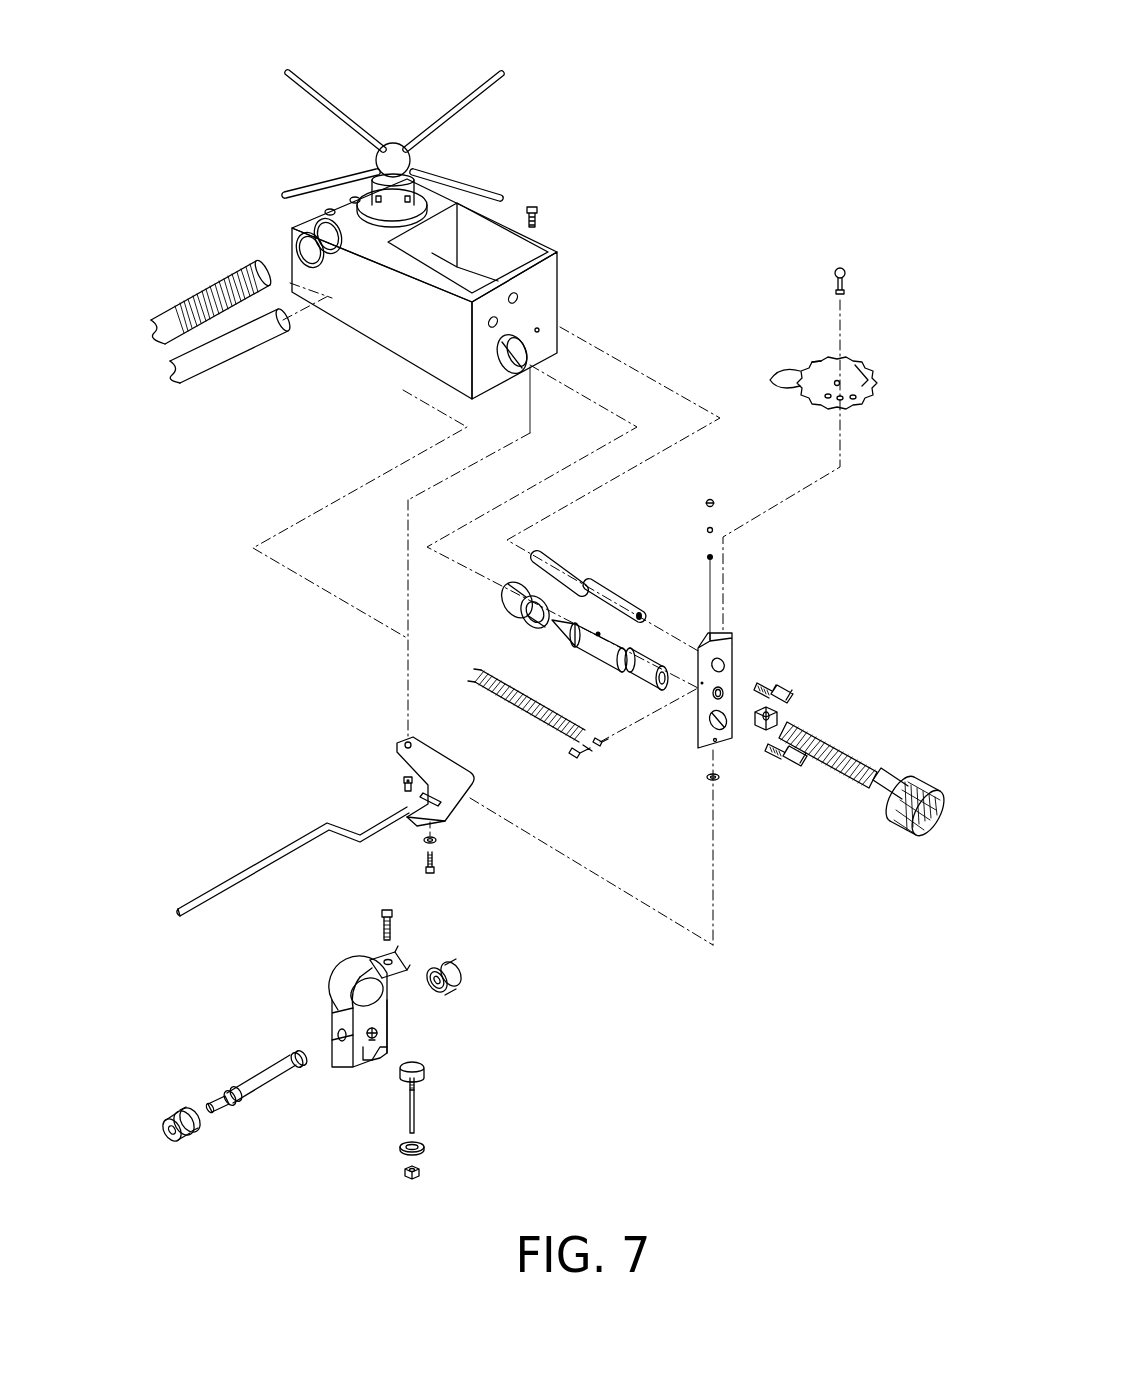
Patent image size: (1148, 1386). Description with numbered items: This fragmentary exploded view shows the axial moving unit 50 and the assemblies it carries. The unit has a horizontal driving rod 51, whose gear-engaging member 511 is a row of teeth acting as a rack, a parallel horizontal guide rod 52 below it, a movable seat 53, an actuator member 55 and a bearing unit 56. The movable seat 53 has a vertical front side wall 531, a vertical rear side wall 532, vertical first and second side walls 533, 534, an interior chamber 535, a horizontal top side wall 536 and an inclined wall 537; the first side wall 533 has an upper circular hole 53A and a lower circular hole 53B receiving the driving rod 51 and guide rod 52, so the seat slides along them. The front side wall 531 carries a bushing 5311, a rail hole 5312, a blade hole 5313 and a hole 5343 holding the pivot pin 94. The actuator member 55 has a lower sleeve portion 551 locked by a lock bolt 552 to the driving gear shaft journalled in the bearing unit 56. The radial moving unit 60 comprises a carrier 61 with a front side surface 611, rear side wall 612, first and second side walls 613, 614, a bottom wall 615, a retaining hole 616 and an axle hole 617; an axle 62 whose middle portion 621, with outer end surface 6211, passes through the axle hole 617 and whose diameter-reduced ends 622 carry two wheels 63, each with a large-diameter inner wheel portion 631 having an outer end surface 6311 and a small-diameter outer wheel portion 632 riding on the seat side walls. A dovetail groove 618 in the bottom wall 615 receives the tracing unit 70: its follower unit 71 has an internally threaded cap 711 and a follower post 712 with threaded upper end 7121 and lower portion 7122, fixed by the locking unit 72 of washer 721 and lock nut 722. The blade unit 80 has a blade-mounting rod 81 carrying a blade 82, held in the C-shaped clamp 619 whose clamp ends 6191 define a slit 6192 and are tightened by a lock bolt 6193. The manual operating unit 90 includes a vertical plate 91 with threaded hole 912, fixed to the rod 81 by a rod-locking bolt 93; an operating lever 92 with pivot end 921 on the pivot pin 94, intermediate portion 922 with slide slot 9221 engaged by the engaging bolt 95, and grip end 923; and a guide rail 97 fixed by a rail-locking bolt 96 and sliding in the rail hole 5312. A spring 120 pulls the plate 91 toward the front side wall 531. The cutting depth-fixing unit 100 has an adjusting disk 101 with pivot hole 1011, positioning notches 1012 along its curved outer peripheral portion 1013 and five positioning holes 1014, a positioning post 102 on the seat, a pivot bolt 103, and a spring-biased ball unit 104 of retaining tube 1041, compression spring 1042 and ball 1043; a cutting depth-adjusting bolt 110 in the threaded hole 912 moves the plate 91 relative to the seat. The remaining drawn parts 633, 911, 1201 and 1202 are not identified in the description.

The axial moving unit 50 is at (352, 360).
The horizontal driving rod 51 is at (192, 316).
The gear-engaging member 511 is at (180, 334).
The horizontal guide rod 52 is at (215, 383).
The movable seat 53 is at (337, 323).
The upper circular hole 53A is at (297, 238).
The lower circular hole 53B is at (313, 230).
The front side wall 531 is at (560, 266).
The bushing 5311 is at (510, 575).
The rail hole 5312 is at (520, 297).
The blade hole 5313 is at (500, 320).
The rear side wall 532 is at (293, 258).
The first side wall 533 is at (402, 330).
The second side wall 534 is at (483, 214).
The interior chamber 535 is at (498, 242).
The horizontal top side wall 536 is at (350, 197).
The inclined wall 537 is at (325, 210).
The hole 5343 is at (542, 330).
The actuator member 55 is at (462, 94).
The lower sleeve portion 551 is at (360, 180).
The lock bolt 552 is at (388, 140).
The bearing unit 56 is at (420, 192).
The radial moving unit 60 is at (252, 1120).
The carrier 61 is at (333, 993).
The front side surface 611 is at (388, 1025).
The rear side wall 612 is at (337, 1003).
The first side wall 613 is at (345, 1053).
The second side wall 614 is at (378, 1040).
The bottom wall 615 is at (372, 1058).
The retaining hole 616 is at (370, 968).
The axle hole 617 is at (338, 1034).
The dovetail groove 618 is at (378, 1062).
The C-shaped clamp 619 is at (378, 951).
The clamp ends 6191 is at (398, 950).
The slit 6192 is at (398, 958).
The lock bolt 6193 is at (380, 913).
The axle 62 is at (278, 1089).
The middle portion 621 is at (238, 1089).
The outer end surface 6211 is at (225, 1098).
The diameter-reduced ends 622 is at (292, 1060).
The wheels 63 is at (490, 955).
The large-diameter inner wheel portion 631 is at (460, 986).
The outer end surface 6311 is at (170, 1118).
The small-diameter outer wheel portion 632 is at (456, 977).
The hole 633 is at (440, 976).
The tracing unit 70 is at (386, 1162).
The follower unit 71 is at (420, 1093).
The internally threaded cap 711 is at (426, 1071).
The vertical follower post 712 is at (418, 1110).
The externally threaded upper end 7121 is at (420, 1091).
The lower portion 7122 is at (418, 1125).
The locking unit 72 is at (404, 1181).
The washer 721 is at (425, 1153).
The lock nut 722 is at (415, 1182).
The blade unit 80 is at (591, 689).
The blade-mounting rod 81 is at (646, 632).
The blade 82 is at (552, 642).
The manual operating unit 90 is at (210, 866).
The vertical plate 91 is at (736, 641).
The hole 911 is at (725, 724).
The threaded hole 912 is at (698, 716).
The operating lever 92 is at (252, 866).
The pivot end 921 is at (402, 737).
The intermediate portion 922 is at (410, 812).
The longitudinal slide slot 9221 is at (420, 800).
The grip end 923 is at (178, 905).
The rod-locking bolt 93 is at (774, 761).
The vertical pivot pin 94 is at (402, 780).
The vertical engaging bolt 95 is at (440, 861).
The rail-locking bolt 96 is at (775, 689).
The horizontal guide rail 97 is at (570, 568).
The cutting depth-fixing unit 100 is at (883, 366).
The horizontal adjusting disk 101 is at (855, 356).
The pivot hole 1011 is at (868, 393).
The positioning notches 1012 is at (775, 368).
The curved outer peripheral portion 1013 is at (818, 357).
The positioning holes 1014 is at (823, 412).
The positioning post 102 is at (540, 211).
The vertical pivot bolt 103 is at (840, 266).
The spring-biased ball unit 104 is at (716, 503).
The retaining tube 1041 is at (705, 503).
The coiled compression spring 1042 is at (706, 556).
The ball 1043 is at (707, 530).
The cutting depth-adjusting bolt 110 is at (903, 768).
The spring 120 is at (542, 745).
The screw 1201 is at (577, 762).
The spring end 1202 is at (470, 684).